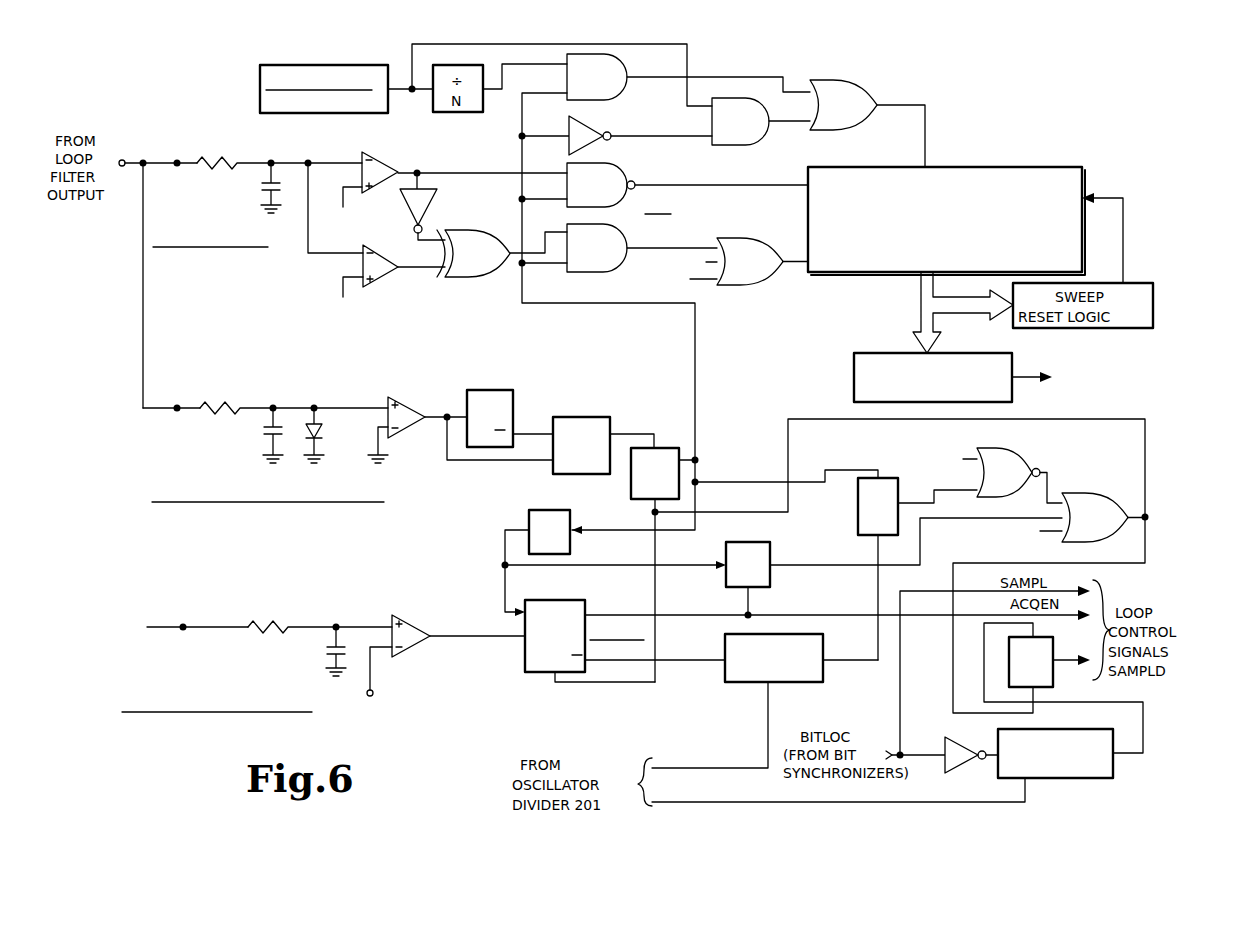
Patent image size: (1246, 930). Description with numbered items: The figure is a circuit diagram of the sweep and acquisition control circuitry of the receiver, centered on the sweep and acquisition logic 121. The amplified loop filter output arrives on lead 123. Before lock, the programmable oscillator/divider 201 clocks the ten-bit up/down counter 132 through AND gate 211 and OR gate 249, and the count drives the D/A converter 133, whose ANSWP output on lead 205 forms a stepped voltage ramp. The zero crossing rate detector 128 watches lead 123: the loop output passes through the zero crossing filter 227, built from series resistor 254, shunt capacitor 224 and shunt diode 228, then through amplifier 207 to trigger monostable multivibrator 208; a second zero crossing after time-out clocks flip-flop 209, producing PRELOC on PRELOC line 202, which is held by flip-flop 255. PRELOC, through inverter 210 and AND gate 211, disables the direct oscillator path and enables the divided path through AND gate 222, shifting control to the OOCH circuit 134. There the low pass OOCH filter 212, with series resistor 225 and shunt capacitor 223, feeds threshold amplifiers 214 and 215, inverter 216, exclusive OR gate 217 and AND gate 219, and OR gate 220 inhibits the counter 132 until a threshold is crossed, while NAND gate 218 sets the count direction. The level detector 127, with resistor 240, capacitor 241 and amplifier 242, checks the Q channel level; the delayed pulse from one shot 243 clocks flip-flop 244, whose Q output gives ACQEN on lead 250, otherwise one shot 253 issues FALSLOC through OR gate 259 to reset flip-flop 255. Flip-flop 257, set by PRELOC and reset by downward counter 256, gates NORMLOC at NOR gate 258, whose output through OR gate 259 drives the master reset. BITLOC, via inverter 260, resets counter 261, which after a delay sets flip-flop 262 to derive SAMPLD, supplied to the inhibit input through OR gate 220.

The lead 123 is at (124, 160).
The low pass OOCH filter 212 is at (247, 138).
The series resistor 225 is at (222, 157).
The shunt capacitor 223 is at (262, 186).
The threshold amplifier 214 is at (388, 166).
The threshold amplifier 215 is at (393, 275).
The inverter 216 is at (431, 205).
The exclusive OR gate 217 is at (453, 231).
The programmable oscillator/divider 201 is at (303, 64).
The AND gate 222 is at (618, 77).
The inverter 210 is at (590, 131).
The OOCH circuit 134 is at (599, 229).
The NAND gate 218 is at (624, 171).
The AND gate 219 is at (630, 245).
The OR gate 220 is at (742, 240).
The AND gate 211 is at (768, 135).
The OR gate 249 is at (835, 83).
The up/down counter 132 is at (1038, 166).
The D/A converter 133 is at (853, 356).
The lead 205 is at (1024, 374).
The zero crossing rate detector 128 is at (405, 344).
The series resistor 254 is at (223, 402).
The zero crossing filter 227 is at (262, 402).
The shunt capacitor 224 is at (262, 432).
The shunt diode 228 is at (321, 441).
The amplifier 207 is at (402, 398).
The monostable multivibrator 208 is at (470, 391).
The flip-flop 209 is at (578, 417).
The flip-flop 255 is at (630, 485).
The PRELOC line 202 is at (692, 458).
The one shot 243 is at (528, 522).
The one shot 253 is at (750, 542).
The flip-flop 257 is at (857, 520).
The NOR gate 258 is at (1012, 457).
The OR gate 259 is at (1092, 497).
The sweep and acquisition logic 121 is at (1066, 471).
The level detector 127 is at (330, 572).
The resistor 240 is at (284, 625).
The capacitor 241 is at (328, 650).
The amplifier 242 is at (403, 626).
The flip-flop 244 is at (553, 604).
The ACQEN signal line 250 is at (700, 614).
The downward counter 256 is at (810, 683).
The inverter 260 is at (952, 742).
The counter 261 is at (1078, 779).
The flip-flop 262 is at (1054, 681).